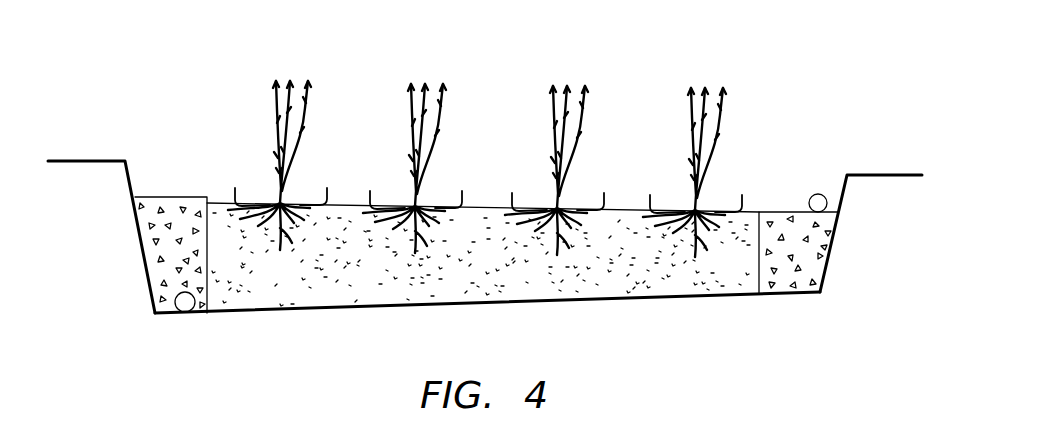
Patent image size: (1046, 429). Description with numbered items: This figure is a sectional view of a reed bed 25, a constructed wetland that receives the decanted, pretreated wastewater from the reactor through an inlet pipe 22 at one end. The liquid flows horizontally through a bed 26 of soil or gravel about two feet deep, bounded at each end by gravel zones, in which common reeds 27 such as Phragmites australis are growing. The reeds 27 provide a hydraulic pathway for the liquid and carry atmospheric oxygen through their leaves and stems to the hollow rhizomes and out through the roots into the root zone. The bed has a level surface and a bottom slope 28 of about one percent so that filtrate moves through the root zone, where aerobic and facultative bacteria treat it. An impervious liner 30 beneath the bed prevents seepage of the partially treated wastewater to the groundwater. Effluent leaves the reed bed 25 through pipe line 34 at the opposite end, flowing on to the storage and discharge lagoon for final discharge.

The inlet pipe 22 is at (818, 183).
The reed bed 25 is at (485, 144).
The bed of soil or gravel 26 is at (215, 197).
The reeds 27 is at (690, 95).
The bottom slope 28 is at (622, 300).
The impervious liner 30 is at (385, 308).
The pipe line 34 is at (175, 302).